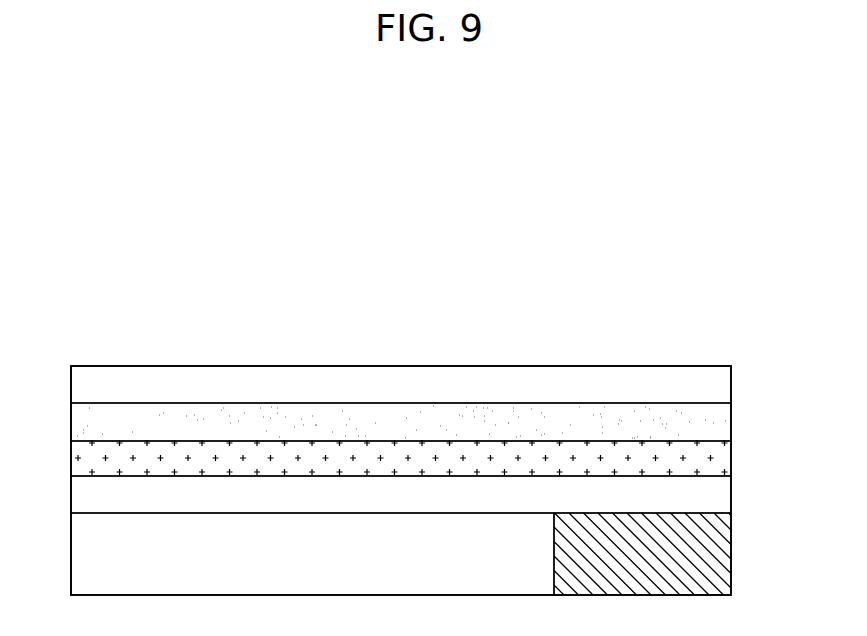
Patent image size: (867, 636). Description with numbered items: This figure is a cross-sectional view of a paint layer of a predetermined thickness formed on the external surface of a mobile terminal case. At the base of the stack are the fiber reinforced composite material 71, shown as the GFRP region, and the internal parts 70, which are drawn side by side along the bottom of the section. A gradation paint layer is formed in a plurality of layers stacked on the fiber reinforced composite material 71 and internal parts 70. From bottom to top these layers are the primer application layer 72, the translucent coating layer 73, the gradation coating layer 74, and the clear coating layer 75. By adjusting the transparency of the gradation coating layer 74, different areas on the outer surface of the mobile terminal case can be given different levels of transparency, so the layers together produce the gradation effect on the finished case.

The internal parts 70 is at (720, 550).
The fiber reinforced composite material 71 is at (82, 551).
The primer application layer 72 is at (720, 492).
The translucent coating layer 73 is at (720, 456).
The gradation coating layer 74 is at (720, 419).
The clear coating layer 75 is at (720, 383).